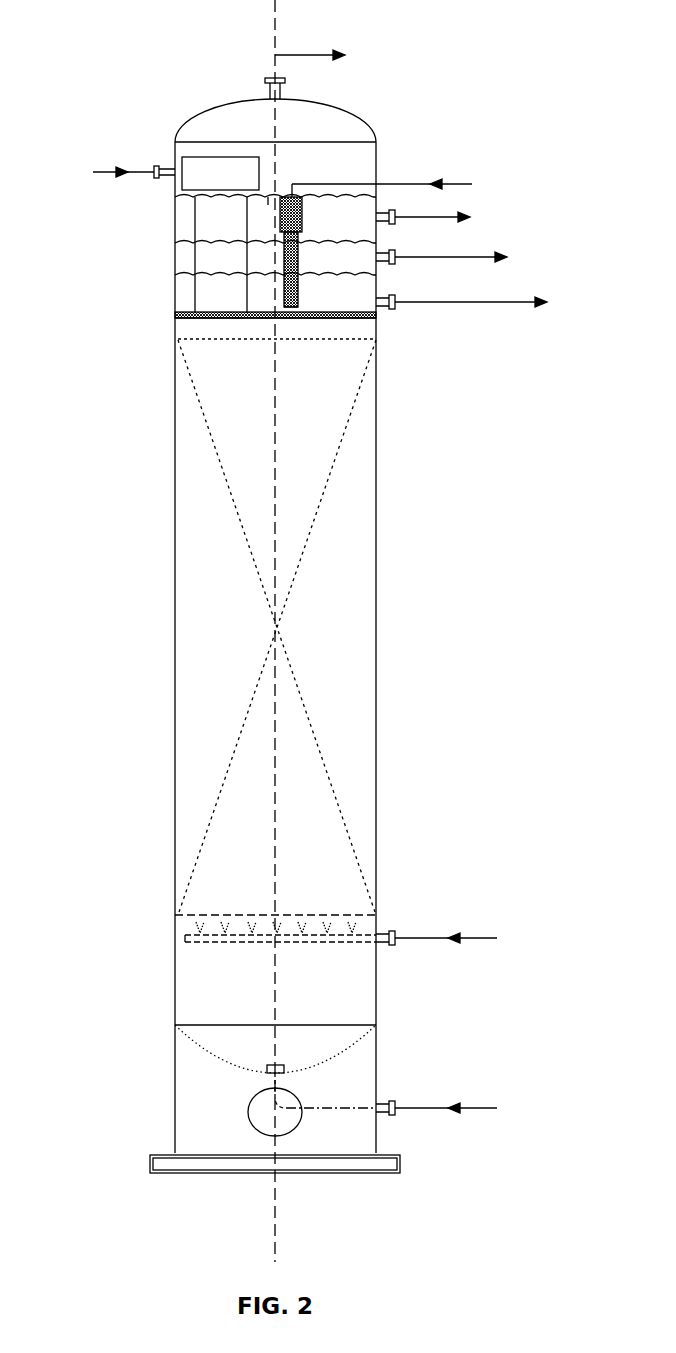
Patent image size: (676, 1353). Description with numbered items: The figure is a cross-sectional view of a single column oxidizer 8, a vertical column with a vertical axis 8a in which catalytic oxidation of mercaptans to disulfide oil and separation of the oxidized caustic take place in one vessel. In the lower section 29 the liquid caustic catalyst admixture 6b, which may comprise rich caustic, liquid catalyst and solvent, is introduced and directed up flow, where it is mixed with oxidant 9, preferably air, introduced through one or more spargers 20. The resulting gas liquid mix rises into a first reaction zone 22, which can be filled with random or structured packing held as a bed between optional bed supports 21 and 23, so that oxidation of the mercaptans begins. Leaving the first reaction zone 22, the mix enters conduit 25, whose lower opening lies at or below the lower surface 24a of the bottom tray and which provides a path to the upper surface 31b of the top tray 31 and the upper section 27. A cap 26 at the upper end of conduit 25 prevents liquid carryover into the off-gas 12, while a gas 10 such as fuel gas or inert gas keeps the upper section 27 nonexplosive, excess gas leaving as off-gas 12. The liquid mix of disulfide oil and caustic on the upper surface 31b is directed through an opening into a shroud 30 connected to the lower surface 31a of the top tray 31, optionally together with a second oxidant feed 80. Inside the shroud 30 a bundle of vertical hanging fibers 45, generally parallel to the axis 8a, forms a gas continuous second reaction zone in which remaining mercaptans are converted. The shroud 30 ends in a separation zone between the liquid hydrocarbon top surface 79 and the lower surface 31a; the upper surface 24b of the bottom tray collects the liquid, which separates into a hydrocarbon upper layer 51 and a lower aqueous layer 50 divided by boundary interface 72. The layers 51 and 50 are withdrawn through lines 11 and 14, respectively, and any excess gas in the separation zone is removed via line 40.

The single column oxidizer 8 is at (376, 600).
The vertical axis 8a is at (275, 27).
The off-gas 12 is at (319, 56).
The upper section 27 is at (262, 133).
The cap 26 is at (207, 185).
The gas 10 is at (112, 172).
The top tray 31 is at (272, 197).
The lower surface of top tray 31a is at (247, 215).
The upper surface of top tray 31b is at (268, 197).
The second oxidant feed 80 is at (448, 184).
The shroud 30 is at (302, 205).
The line 40 is at (449, 217).
The line 11 is at (482, 257).
The line 14 is at (516, 302).
The liquid hydrocarbon top surface 79 is at (212, 242).
The conduit 25 is at (195, 258).
The boundary interface 72 is at (207, 273).
The hydrocarbon upper layer 51 is at (322, 270).
The lower aqueous layer 50 is at (322, 308).
The upper surface of bottom tray 24b is at (268, 312).
The lower surface of bottom tray 24a is at (257, 318).
The vertical hanging fibers 45 is at (302, 305).
The bed support 23 is at (227, 340).
The first reaction zone 22 is at (262, 536).
The bed support 21 is at (333, 915).
The sparger 20 is at (225, 942).
The oxidant 9 is at (487, 938).
The lower section 29 is at (262, 1008).
The liquid caustic catalyst admixture 6b is at (486, 1110).